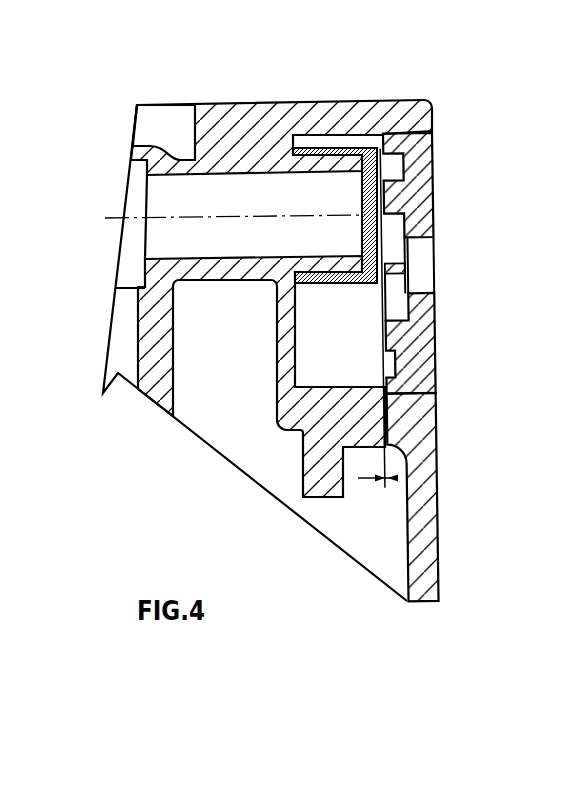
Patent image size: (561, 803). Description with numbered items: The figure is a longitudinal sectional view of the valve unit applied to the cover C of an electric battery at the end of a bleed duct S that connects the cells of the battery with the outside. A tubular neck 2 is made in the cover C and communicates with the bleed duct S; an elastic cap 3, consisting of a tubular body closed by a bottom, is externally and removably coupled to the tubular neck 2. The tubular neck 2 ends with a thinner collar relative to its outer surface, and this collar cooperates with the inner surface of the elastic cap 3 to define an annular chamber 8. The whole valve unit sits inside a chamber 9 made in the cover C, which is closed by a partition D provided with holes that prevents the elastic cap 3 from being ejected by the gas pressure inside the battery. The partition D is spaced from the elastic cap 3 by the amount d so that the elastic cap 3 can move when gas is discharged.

The annular chamber 8 is at (432, 135).
The tubular neck 2 is at (305, 173).
The elastic cap 3 is at (345, 308).
The bleed ducts S is at (170, 242).
The partition D is at (425, 188).
The chamber 9 is at (405, 378).
The cover C is at (427, 527).
The amount d is at (358, 478).